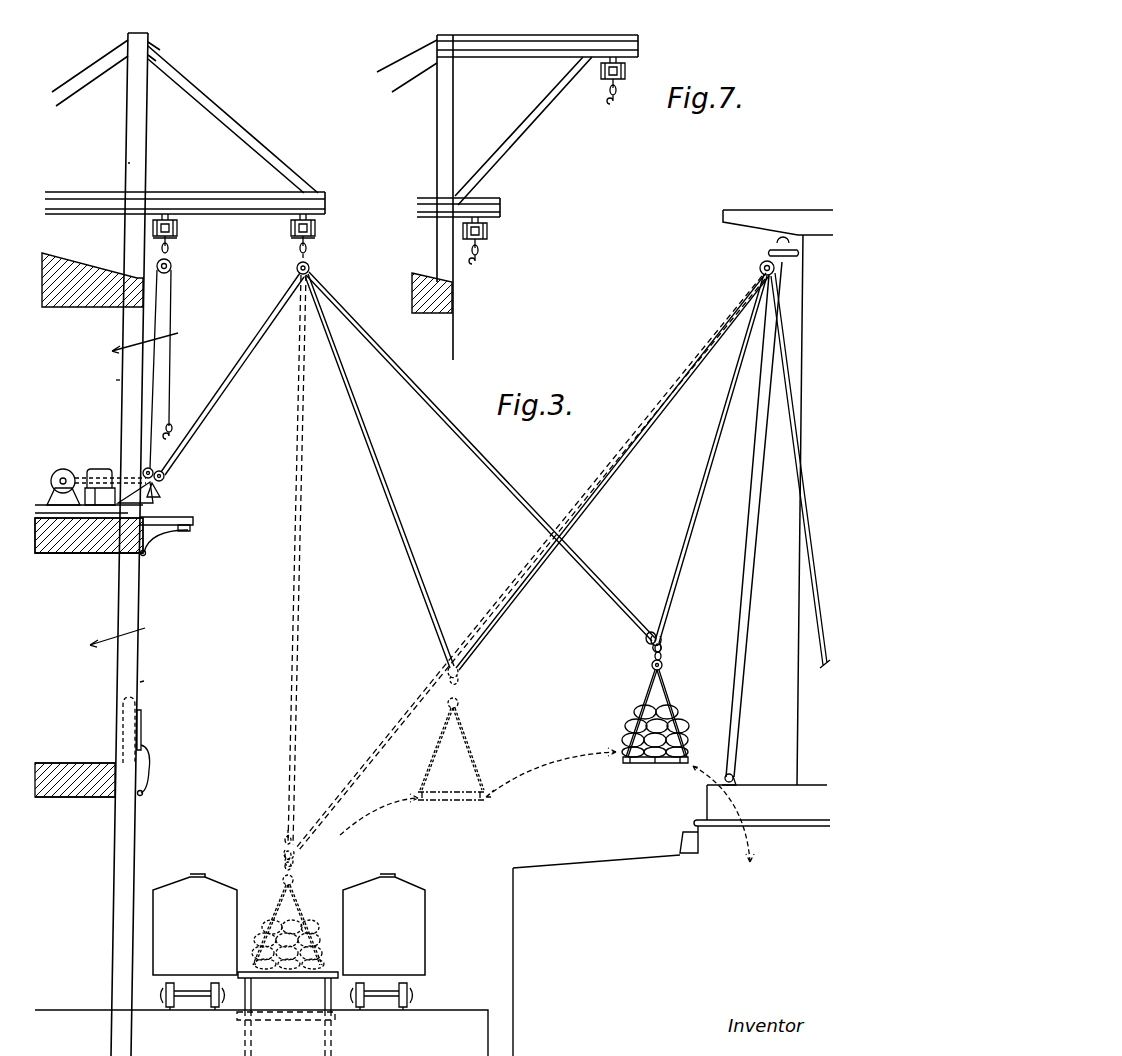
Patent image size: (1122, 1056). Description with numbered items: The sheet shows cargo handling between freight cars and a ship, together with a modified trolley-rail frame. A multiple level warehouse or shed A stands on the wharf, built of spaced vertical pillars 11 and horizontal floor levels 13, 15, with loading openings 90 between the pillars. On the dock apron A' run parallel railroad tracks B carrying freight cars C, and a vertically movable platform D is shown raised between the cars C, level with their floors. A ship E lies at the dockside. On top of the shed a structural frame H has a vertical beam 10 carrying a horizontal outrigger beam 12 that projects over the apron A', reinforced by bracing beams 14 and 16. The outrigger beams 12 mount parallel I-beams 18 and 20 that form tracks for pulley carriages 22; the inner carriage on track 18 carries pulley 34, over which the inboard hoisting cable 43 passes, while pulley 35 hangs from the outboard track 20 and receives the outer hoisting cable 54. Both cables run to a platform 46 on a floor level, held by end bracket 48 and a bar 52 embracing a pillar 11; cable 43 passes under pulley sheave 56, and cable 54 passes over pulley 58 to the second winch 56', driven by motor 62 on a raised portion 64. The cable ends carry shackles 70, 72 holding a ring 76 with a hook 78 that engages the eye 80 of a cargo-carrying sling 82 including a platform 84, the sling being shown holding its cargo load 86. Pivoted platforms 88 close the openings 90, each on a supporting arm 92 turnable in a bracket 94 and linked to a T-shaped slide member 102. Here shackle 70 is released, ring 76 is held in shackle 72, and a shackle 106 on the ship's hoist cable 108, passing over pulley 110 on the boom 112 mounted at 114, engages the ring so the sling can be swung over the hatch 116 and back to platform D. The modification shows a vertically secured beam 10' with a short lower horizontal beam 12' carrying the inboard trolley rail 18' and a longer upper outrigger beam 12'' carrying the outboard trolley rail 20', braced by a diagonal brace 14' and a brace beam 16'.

In FIG. 3, the vertical beam 10 is at (120, 544).
In FIG. 3, the vertical pillar 11 is at (125, 376).
In FIG. 3, the horizontal outrigger beam 12 is at (185, 192).
In FIG. 3, the bracing beam 14 is at (233, 119).
In FIG. 3, the bracing beam 16 is at (106, 75).
In FIG. 3, the inner I-beam track 18 is at (194, 225).
In FIG. 3, the outboard I-beam track 20 is at (324, 223).
In FIG. 3, the pulley carriage 22 is at (185, 243).
In FIG. 3, the pulley 34 is at (172, 270).
In FIG. 3, the pulley 35 is at (311, 268).
In FIG. 3, the hoisting cable 43 is at (171, 350).
In FIG. 3, the platform 46 is at (65, 516).
In FIG. 3, the end bracket 48 is at (160, 502).
In FIG. 3, the bar 52 is at (165, 496).
In FIG. 3, the outer hoisting cable 54 is at (223, 395).
In FIG. 3, the pulley sheave 56 is at (181, 454).
In FIG. 3, the second winch 56' is at (62, 467).
In FIG. 3, the pulley 58 is at (166, 478).
In FIG. 3, the motor 62 is at (97, 469).
In FIG. 3, the raised portion 64 is at (100, 506).
In FIG. 3, the shackle 70 is at (172, 428).
In FIG. 3, the shackle 72 is at (645, 645).
In FIG. 3, the ring 76 is at (671, 651).
In FIG. 3, the hook 78 is at (651, 660).
In FIG. 3, the eye 80 is at (462, 705).
In FIG. 3, the cargo-carrying sling 82 is at (466, 760).
In FIG. 3, the sling platform 84 is at (432, 800).
In FIG. 3, the load of sacks 86 is at (635, 728).
In FIG. 3, the pivoted platform 88 is at (192, 521).
In FIG. 3, the loading opening 90 is at (147, 483).
In FIG. 3, the supporting arm 92 is at (178, 548).
In FIG. 3, the bracket 94 is at (146, 558).
In FIG. 3, the T-shaped slide member 102 is at (186, 535).
In FIG. 3, the shackle 106 is at (463, 681).
In FIG. 3, the ship's hoist cable 108 is at (709, 320).
In FIG. 3, the pulley 110 is at (759, 268).
In FIG. 3, the ship's boom 112 is at (748, 553).
In FIG. 3, the boom mounting 114 is at (737, 779).
In FIG. 3, the ship's hatch 116 is at (780, 831).
In FIG. 3, the floor level 13 is at (60, 792).
In FIG. 3, the floor level 15 is at (80, 520).
In FIG. 3, the structural frame H is at (120, 169).
In FIG. 3, the warehouse or shed A is at (156, 679).
In FIG. 3, the dock apron A' is at (261, 1019).
In FIG. 3, the railroad track B is at (162, 1010).
In FIG. 3, the freight car C is at (289, 924).
In FIG. 3, the vertically movable platform D is at (296, 986).
In FIG. 3, the ship E is at (580, 860).
In FIG. 7, the vertically secured beam 10' is at (422, 197).
In FIG. 7, the lower horizontal beam 12' is at (484, 198).
In FIG. 7, the upper horizontal outrigger beam 12'' is at (537, 60).
In FIG. 7, the diagonal brace 14' is at (523, 131).
In FIG. 7, the brace beam 16' is at (407, 64).
In FIG. 7, the inboard trolley rail 18' is at (500, 240).
In FIG. 7, the outboard trolley rail 20' is at (638, 78).